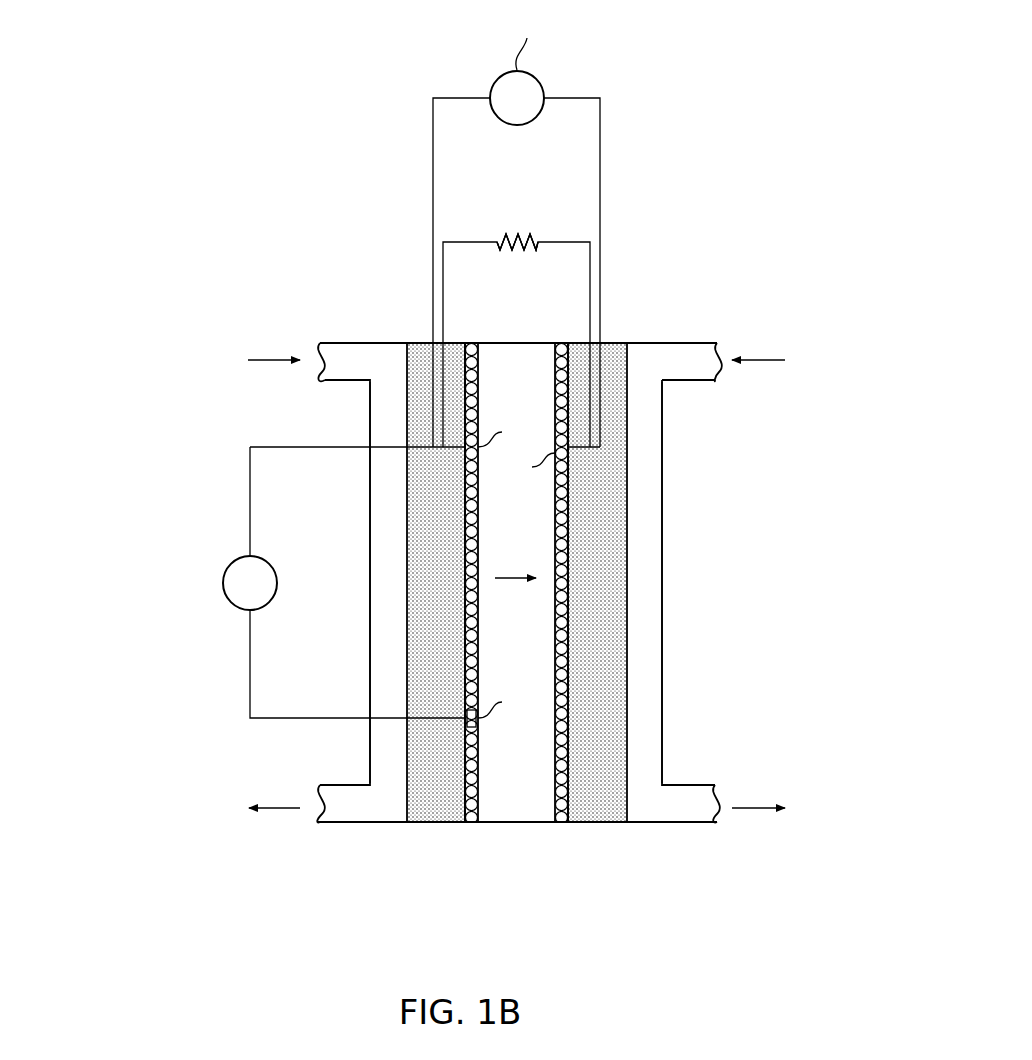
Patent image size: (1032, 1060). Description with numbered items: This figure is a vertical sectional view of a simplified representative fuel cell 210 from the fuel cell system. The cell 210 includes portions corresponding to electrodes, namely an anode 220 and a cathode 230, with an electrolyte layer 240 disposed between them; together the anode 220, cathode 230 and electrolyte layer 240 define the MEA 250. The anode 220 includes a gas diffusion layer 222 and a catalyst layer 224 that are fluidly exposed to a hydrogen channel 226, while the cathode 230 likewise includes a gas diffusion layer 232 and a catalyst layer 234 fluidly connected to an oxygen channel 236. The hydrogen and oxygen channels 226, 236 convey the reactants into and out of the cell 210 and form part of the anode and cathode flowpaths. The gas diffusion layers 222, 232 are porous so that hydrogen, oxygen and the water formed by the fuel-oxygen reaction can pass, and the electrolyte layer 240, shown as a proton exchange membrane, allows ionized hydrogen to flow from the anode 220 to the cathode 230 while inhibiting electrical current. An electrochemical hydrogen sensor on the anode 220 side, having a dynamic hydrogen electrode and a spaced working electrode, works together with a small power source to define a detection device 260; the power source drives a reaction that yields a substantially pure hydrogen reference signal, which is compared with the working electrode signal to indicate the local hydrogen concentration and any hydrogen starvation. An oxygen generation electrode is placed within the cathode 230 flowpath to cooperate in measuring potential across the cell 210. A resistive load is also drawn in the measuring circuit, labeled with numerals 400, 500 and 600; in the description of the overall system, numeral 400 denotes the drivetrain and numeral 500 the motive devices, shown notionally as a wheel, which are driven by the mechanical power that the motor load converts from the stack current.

The fuel cell 210 is at (356, 275).
The anode 220 is at (470, 830).
The gas diffusion layer 222 is at (417, 345).
The catalyst layer 224 is at (472, 345).
The hydrogen channel 226 is at (370, 505).
The cathode 230 is at (562, 830).
The gas diffusion layer 232 is at (618, 345).
The catalyst layer 234 is at (562, 345).
The oxygen channel 236 is at (662, 458).
The electrolyte layer 240 is at (475, 830).
The MEA 250 is at (403, 897).
The detection device 260 is at (143, 693).
The drivetrain 400 is at (504, 202).
The motive devices 500 is at (537, 202).
The load resistor 600 is at (517, 235).